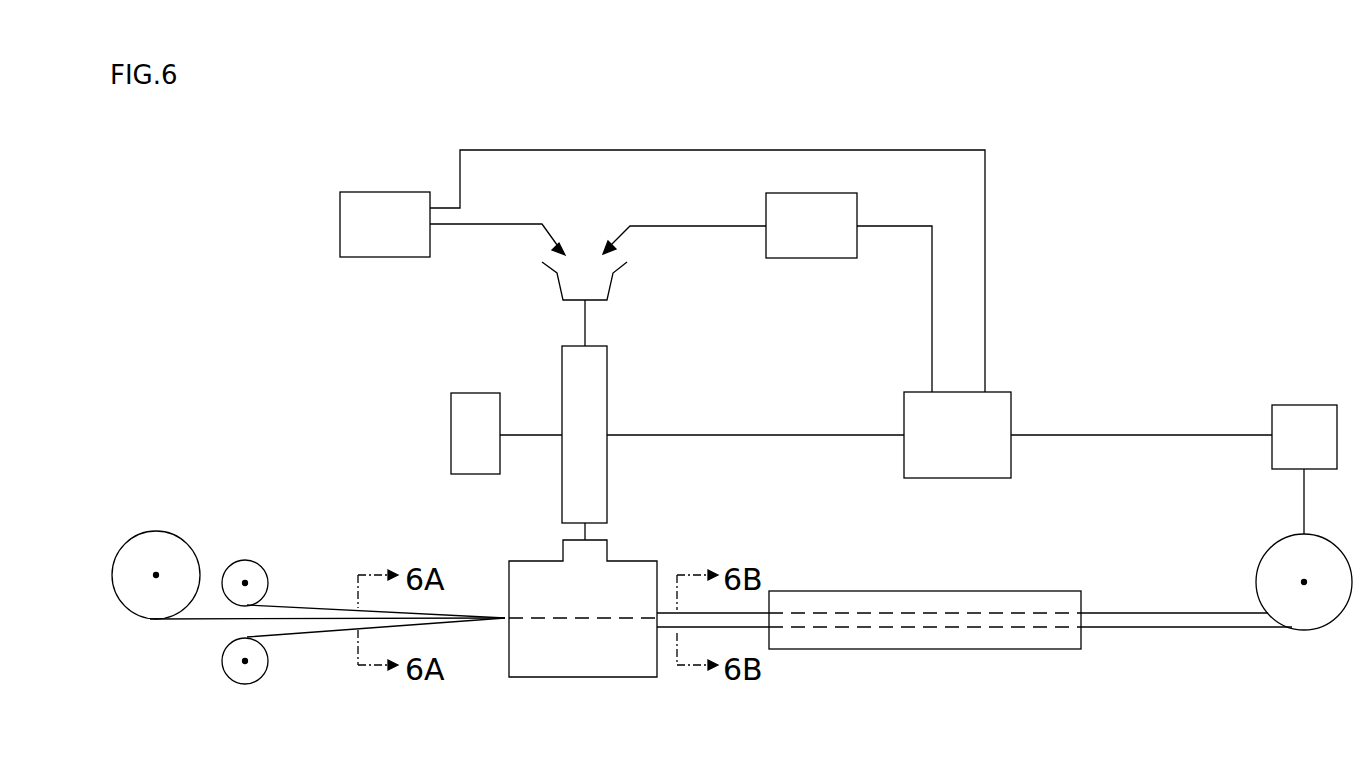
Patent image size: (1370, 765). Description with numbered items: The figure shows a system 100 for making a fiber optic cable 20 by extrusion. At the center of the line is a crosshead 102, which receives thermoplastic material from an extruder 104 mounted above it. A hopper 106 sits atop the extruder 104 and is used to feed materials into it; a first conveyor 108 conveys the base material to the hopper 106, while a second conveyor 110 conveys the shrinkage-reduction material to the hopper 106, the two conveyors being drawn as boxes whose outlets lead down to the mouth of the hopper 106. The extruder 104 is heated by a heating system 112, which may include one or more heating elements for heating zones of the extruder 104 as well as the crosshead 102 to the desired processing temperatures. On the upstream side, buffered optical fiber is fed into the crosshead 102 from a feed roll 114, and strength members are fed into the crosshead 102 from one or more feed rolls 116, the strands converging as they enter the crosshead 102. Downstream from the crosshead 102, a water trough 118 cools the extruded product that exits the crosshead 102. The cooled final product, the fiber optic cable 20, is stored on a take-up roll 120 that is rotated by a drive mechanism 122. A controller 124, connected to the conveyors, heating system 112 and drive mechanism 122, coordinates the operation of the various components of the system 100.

The fiber optic cable 20 is at (1157, 612).
The system 100 is at (1056, 322).
The crosshead 102 is at (640, 561).
The extruder 104 is at (607, 400).
The hopper 106 is at (613, 278).
The first conveyor 108 is at (818, 192).
The second conveyor 110 is at (372, 192).
The heating system 112 is at (451, 440).
The feed roll 114 is at (152, 532).
The feed rolls 116 is at (262, 567).
The water trough 118 is at (853, 591).
The take-up roll 120 is at (1258, 568).
The drive mechanism 122 is at (1305, 405).
The controller 124 is at (952, 478).